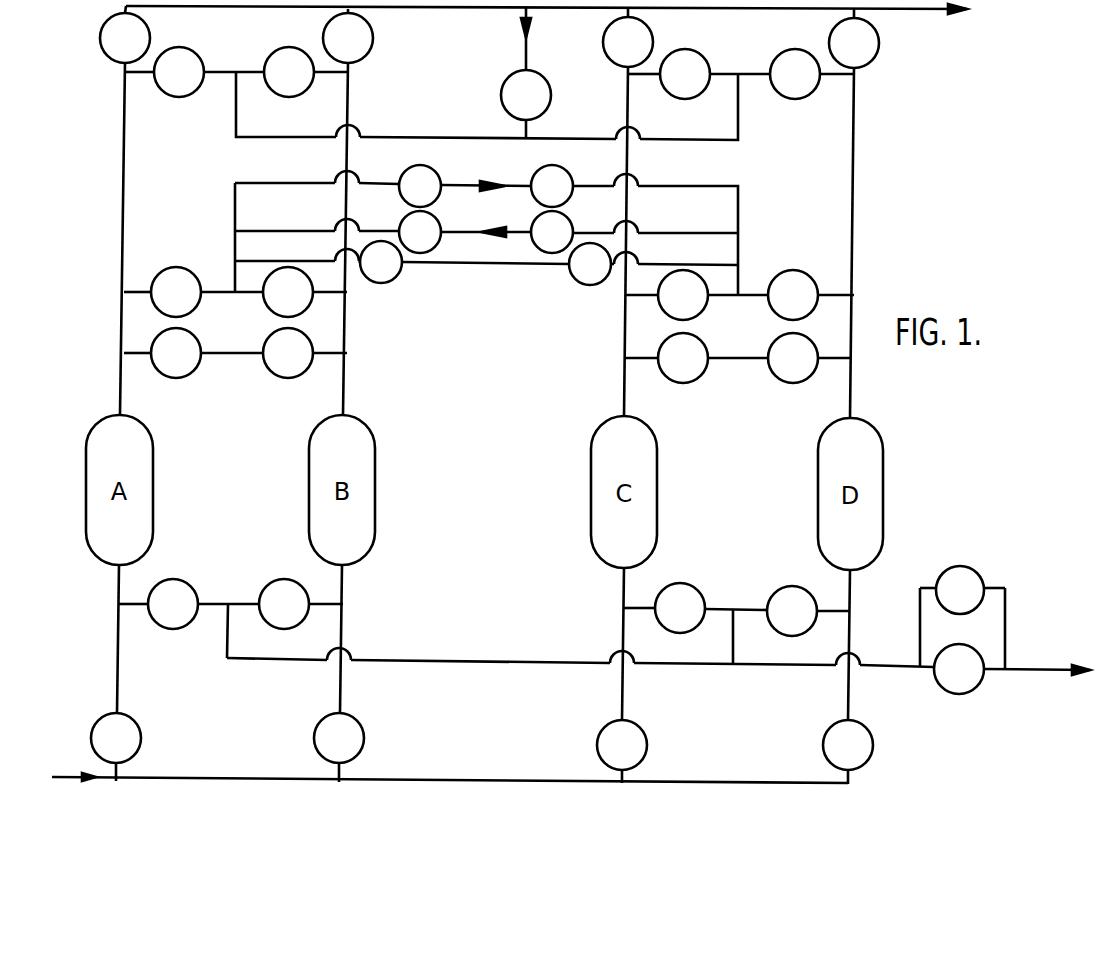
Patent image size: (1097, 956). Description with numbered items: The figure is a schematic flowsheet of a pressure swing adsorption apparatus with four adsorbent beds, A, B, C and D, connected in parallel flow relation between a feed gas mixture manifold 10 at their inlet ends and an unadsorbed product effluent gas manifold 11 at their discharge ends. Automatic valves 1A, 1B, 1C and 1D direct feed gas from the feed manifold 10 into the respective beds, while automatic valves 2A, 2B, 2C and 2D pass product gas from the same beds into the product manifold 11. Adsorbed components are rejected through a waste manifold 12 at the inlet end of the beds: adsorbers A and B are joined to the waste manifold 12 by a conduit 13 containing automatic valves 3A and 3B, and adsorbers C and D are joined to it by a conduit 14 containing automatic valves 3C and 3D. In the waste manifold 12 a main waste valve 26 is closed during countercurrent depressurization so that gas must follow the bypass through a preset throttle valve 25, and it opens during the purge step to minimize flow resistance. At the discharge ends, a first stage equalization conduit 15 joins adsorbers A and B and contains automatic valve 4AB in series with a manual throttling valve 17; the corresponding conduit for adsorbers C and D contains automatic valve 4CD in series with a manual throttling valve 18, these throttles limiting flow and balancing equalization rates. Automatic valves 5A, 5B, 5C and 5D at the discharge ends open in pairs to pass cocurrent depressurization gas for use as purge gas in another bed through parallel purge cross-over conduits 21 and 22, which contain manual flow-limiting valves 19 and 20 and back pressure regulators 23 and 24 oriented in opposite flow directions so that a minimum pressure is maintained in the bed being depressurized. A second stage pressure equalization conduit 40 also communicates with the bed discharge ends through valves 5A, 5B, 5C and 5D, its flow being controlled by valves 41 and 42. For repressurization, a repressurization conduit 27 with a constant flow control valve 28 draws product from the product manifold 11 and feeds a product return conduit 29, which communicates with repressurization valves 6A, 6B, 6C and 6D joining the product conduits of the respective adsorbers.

The automatic valve 1A is at (141, 740).
The automatic valve 1B is at (364, 740).
The automatic valve 1C is at (647, 745).
The automatic valve 1D is at (873, 745).
The automatic valve 2A is at (149, 42).
The automatic valve 2B is at (372, 42).
The automatic valve 2C is at (652, 46).
The automatic valve 2D is at (878, 46).
The automatic valve 3A is at (193, 620).
The automatic valve 3B is at (304, 620).
The automatic valve 3C is at (700, 624).
The automatic valve 3D is at (812, 627).
The automatic valve 4AB is at (200, 327).
The automatic valve 4CD is at (778, 338).
The automatic valve 5A is at (206, 272).
The automatic valve 5B is at (308, 283).
The automatic valve 5C is at (663, 287).
The automatic valve 5D is at (772, 286).
The repressurization valve 6A is at (198, 88).
The repressurization valve 6B is at (270, 88).
The repressurization valve 6C is at (704, 90).
The repressurization valve 6D is at (776, 90).
The feed gas mixture manifold 10 is at (80, 776).
The unadsorbed product effluent gas manifold 11 is at (932, 9).
The waste manifold 12 is at (481, 665).
The conduit 13 is at (248, 604).
The conduit 14 is at (747, 609).
The first stage equalization conduit 15 is at (250, 357).
The valve 17 is at (303, 333).
The valve 18 is at (665, 340).
The manual valve 19 is at (565, 168).
The manual valve 20 is at (436, 216).
The purge cross-over conduit 21 is at (505, 188).
The purge cross-over conduit 22 is at (517, 235).
The back pressure regulator 23 is at (432, 168).
The back pressure regulator 24 is at (566, 216).
The preset throttle valve 25 is at (982, 578).
The main waste valve 26 is at (983, 678).
The repressurization conduit 27 is at (523, 50).
The constant flow control valve 28 is at (544, 78).
The product return conduit 29 is at (443, 137).
The second stage pressure equalization conduit 40 is at (521, 266).
The valve 41 is at (388, 283).
The valve 42 is at (590, 285).